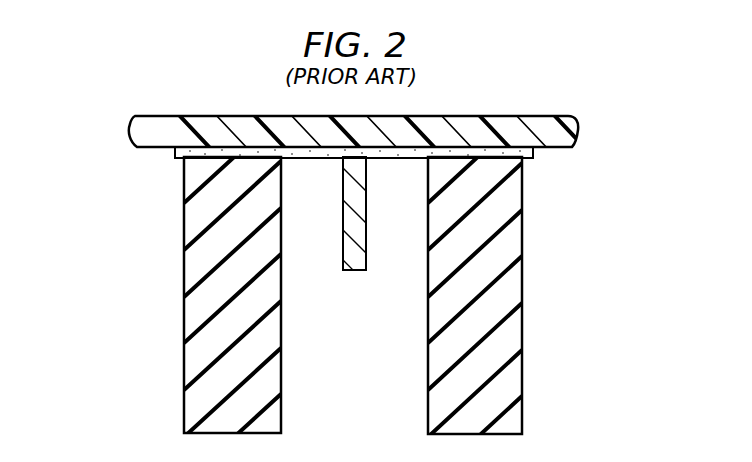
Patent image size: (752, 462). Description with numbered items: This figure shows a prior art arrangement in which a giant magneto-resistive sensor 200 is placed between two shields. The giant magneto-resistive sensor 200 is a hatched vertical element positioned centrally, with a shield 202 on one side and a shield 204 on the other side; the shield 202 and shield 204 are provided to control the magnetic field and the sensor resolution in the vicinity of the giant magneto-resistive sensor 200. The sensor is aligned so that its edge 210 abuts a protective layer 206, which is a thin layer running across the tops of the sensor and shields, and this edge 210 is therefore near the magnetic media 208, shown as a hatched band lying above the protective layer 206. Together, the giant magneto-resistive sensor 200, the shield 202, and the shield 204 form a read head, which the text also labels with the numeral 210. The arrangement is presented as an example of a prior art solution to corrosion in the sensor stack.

The giant magneto-resistive sensor 200 is at (352, 271).
The shield 202 is at (184, 320).
The shield 204 is at (522, 285).
The protective layer 206 is at (175, 148).
The magnetic media 208 is at (130, 128).
The edge / read head 210 is at (331, 174).